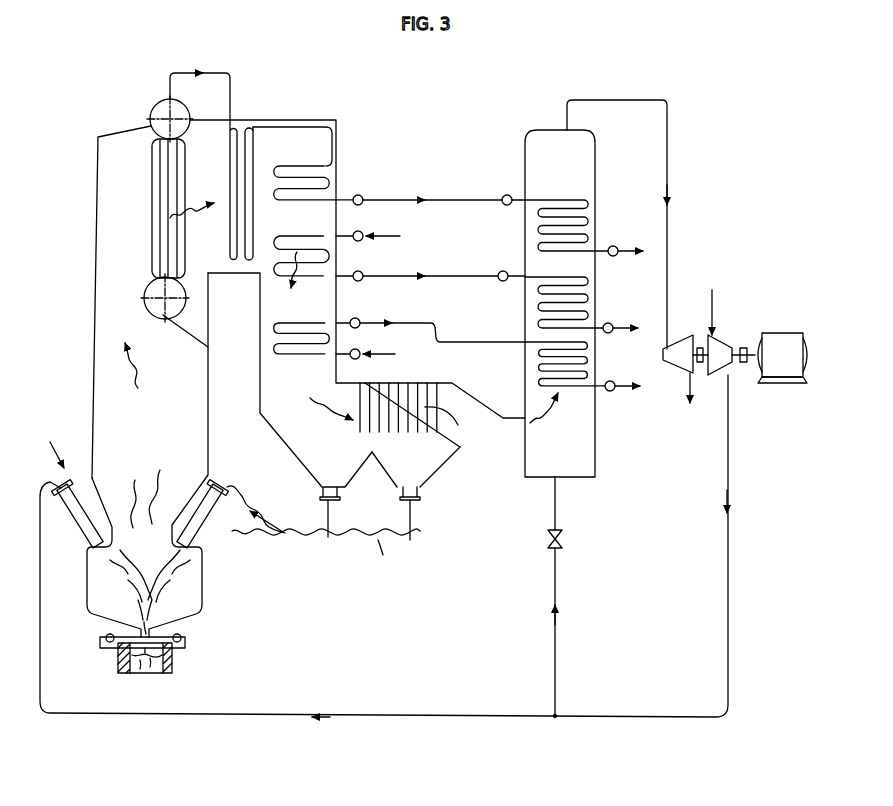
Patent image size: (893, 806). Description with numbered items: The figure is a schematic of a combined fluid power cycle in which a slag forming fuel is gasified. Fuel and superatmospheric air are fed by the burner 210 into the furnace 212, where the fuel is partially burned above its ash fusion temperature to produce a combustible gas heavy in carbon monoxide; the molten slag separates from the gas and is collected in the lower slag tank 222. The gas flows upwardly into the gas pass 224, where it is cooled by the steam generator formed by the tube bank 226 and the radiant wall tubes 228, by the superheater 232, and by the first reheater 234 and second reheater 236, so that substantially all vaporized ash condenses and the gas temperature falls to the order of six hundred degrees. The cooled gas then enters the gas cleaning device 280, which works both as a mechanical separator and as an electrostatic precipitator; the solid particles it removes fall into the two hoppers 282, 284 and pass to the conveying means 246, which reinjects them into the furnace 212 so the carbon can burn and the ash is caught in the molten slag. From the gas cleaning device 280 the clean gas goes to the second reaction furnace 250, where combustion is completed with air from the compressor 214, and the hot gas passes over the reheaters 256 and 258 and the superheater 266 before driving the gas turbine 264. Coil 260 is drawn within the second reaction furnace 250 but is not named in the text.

The burner 210 is at (78, 503).
The furnace 212 is at (160, 454).
The compressor 214 is at (715, 362).
The slag tank 222 is at (172, 668).
The gas pass 224 is at (222, 161).
The steam generator tube bank 226 is at (163, 196).
The steam generator radiant wall tubes 228 is at (93, 249).
The superheater 232 is at (243, 128).
The first reheater 234 is at (296, 248).
The second reheater 236 is at (289, 341).
The conveying means 246 is at (374, 546).
The second reaction furnace 250 is at (595, 426).
The reheater 256 is at (580, 364).
The reheater 258 is at (540, 300).
The upper heat exchange coil 260 is at (565, 215).
The gas turbine 264 is at (680, 352).
The superheater 266 is at (783, 350).
The gas cleaning device 280 is at (383, 392).
The hopper 282 is at (350, 470).
The hopper 284 is at (435, 472).